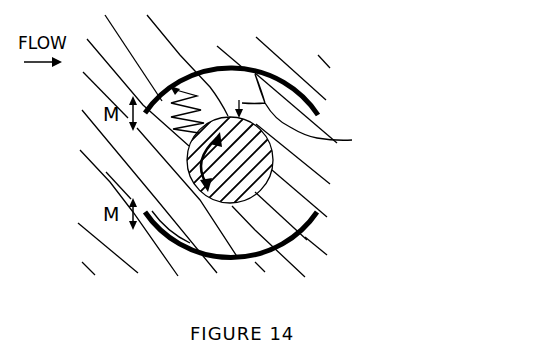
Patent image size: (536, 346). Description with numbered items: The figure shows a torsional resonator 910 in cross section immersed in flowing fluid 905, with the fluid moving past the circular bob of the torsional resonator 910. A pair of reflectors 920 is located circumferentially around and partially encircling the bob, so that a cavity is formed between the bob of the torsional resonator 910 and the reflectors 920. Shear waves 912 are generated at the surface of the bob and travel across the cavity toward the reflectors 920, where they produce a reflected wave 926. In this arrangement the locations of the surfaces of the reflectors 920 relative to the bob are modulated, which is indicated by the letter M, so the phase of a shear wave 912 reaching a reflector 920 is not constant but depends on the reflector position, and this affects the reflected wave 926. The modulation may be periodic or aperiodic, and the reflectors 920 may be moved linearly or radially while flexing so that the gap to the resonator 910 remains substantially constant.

The flowing fluid 905 is at (231, 140).
The torsional resonator 910 is at (273, 160).
The shear waves 912 is at (195, 133).
The reflectors 920 is at (222, 71).
The reflected wave 926 is at (352, 140).